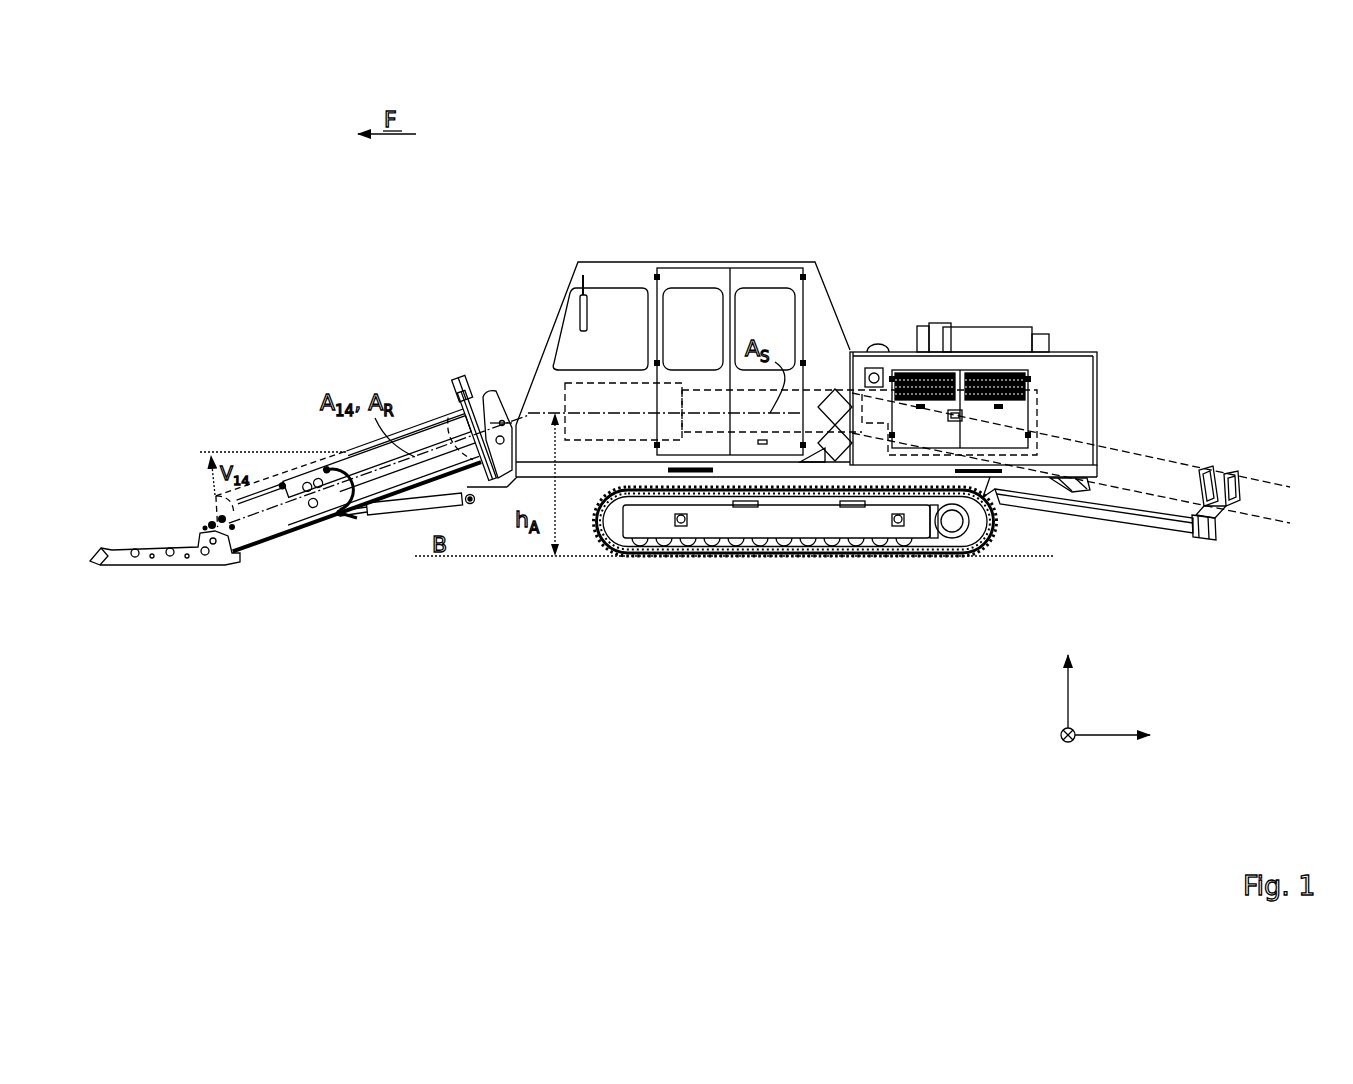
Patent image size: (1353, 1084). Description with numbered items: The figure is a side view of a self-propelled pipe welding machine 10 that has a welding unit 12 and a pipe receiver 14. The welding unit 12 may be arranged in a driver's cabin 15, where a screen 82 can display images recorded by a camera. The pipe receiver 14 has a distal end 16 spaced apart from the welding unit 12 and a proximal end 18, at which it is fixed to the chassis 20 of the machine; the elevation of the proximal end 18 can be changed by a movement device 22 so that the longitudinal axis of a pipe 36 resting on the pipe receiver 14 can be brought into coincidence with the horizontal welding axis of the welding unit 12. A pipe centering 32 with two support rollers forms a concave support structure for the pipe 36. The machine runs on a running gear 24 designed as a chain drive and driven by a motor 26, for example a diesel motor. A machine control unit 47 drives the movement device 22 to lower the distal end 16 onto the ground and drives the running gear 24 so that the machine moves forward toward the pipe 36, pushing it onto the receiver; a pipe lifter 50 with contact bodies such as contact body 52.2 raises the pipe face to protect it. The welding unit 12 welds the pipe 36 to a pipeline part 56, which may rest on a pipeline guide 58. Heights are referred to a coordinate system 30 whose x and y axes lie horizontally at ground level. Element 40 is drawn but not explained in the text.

The pipe welding machine 10 is at (1042, 184).
The welding unit 12 is at (600, 395).
The pipe receiver 14 is at (188, 327).
The driver's cabin 15 is at (735, 254).
The distal end 16 is at (172, 493).
The proximal end 18 is at (452, 321).
The chassis 20 is at (1120, 473).
The movement device 22 is at (493, 522).
The running gear 24 is at (703, 563).
The motor 26 is at (1030, 400).
The coordinate system 30 is at (1152, 683).
The pipe centering 32 is at (462, 388).
The pipe 36 is at (312, 460).
The boom mount 40 is at (480, 382).
The machine control unit 47 is at (877, 380).
The pipe lifter 50 is at (141, 582).
The contact body 52.2 is at (100, 567).
The pipeline part 56 is at (1182, 487).
The pipeline guide 58 is at (1077, 498).
The screen 82 is at (582, 308).